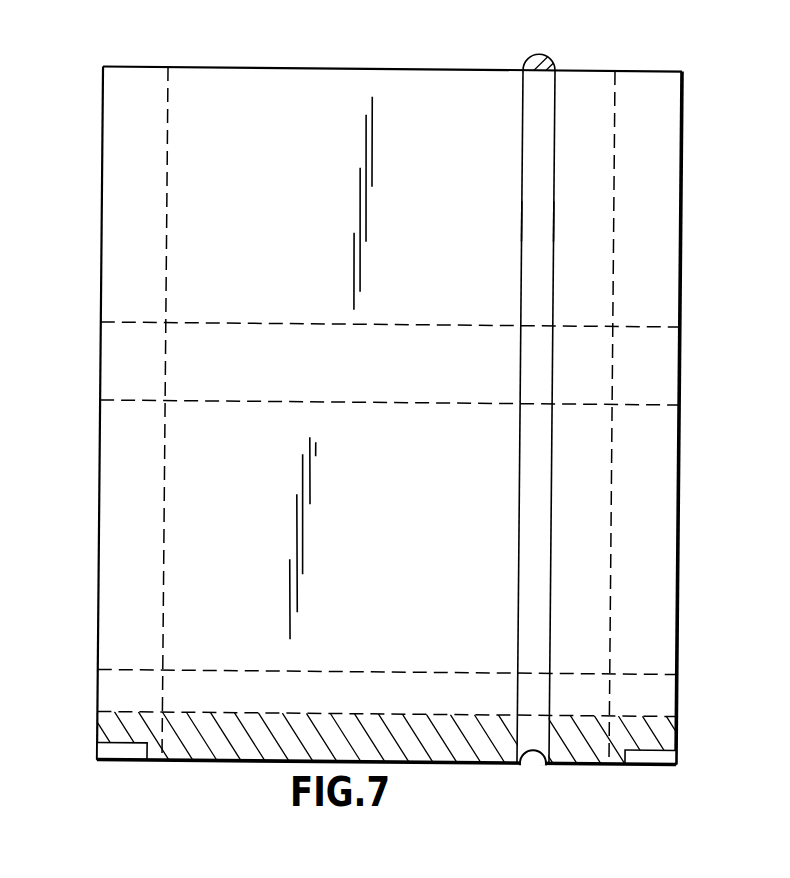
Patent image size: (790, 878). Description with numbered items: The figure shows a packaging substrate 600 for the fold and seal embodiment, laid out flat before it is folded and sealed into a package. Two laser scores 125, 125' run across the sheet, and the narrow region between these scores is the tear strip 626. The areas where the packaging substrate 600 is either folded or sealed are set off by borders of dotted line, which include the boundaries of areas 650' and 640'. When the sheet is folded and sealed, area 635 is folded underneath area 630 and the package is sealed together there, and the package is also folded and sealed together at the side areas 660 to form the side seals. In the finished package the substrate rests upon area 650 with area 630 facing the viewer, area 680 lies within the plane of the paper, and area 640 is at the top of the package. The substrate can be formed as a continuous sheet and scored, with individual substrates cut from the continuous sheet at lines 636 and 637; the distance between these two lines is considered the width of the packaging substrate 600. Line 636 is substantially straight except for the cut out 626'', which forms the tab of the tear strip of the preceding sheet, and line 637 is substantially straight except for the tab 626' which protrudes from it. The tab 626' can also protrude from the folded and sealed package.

The packaging substrate 600 is at (581, 59).
The area 630 is at (213, 98).
The line 637 is at (252, 70).
The side areas 660 is at (127, 235).
The tear strip 626 is at (495, 392).
The tab 626' is at (523, 41).
The cut out 626'' is at (572, 780).
The laser score 125 is at (580, 233).
The laser score 125' is at (473, 221).
The area 650 is at (390, 340).
The fold line 650' is at (389, 359).
The area 680 is at (192, 612).
The area 640 is at (381, 745).
The strip fold line 640' is at (387, 647).
The area 635 is at (418, 717).
The line 636 is at (265, 762).